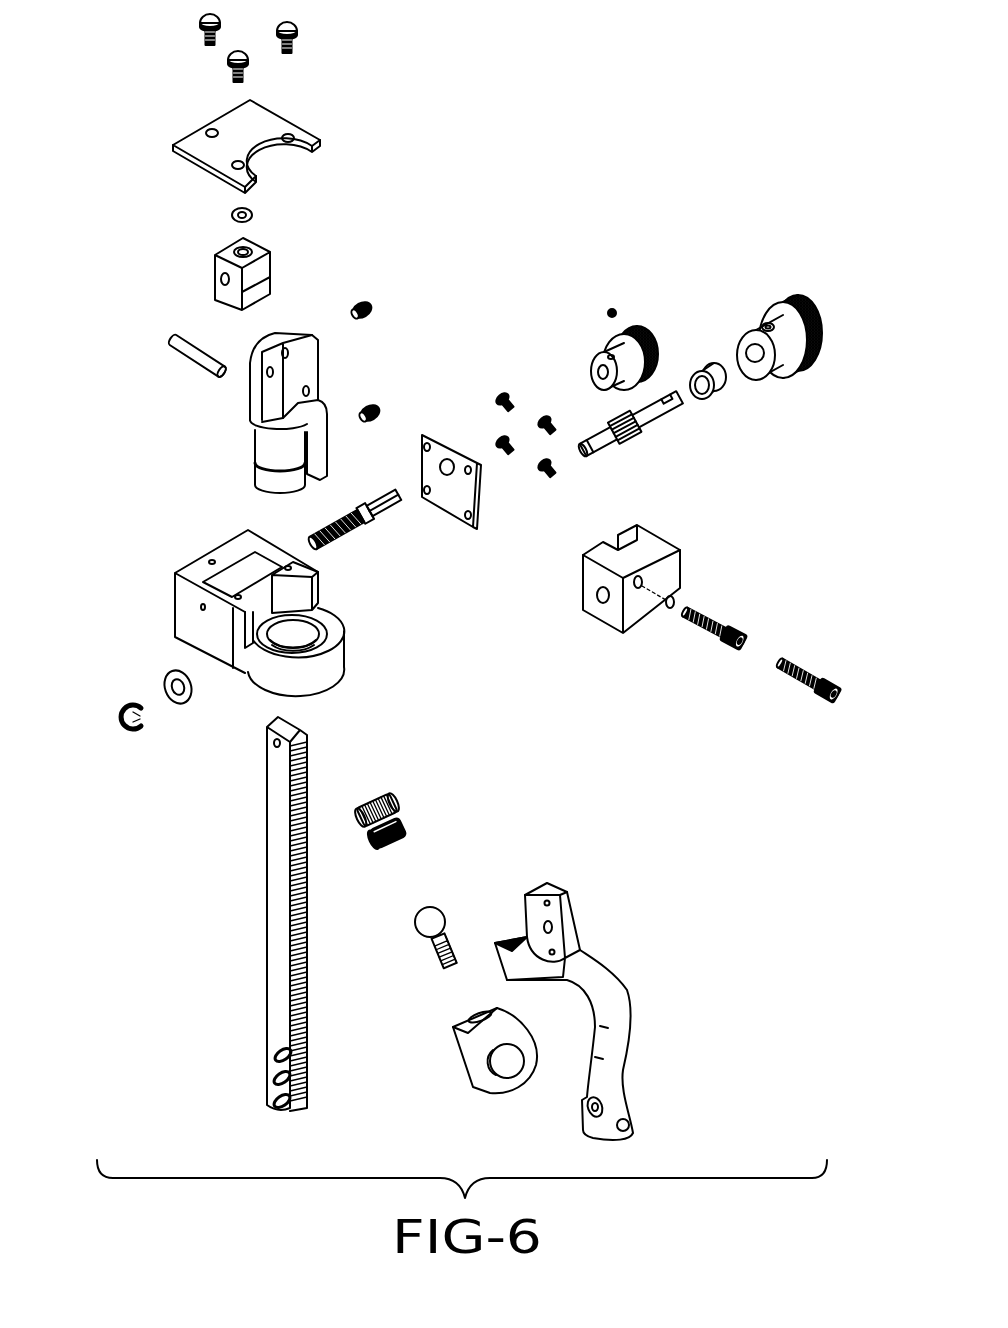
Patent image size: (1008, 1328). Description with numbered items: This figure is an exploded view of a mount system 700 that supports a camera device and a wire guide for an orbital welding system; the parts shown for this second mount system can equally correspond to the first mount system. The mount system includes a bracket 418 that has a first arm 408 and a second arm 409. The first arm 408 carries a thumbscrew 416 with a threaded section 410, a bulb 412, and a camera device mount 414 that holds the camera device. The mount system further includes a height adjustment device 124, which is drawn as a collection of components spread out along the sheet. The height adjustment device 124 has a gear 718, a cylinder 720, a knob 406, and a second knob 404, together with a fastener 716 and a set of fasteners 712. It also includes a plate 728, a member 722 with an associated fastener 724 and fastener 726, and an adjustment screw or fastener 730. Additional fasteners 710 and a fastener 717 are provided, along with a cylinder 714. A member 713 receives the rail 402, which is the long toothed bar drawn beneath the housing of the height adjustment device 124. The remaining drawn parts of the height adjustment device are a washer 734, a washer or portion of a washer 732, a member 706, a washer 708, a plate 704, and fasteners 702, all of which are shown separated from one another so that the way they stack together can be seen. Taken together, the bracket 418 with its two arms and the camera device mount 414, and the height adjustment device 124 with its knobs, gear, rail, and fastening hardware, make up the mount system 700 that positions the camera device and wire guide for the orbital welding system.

The drive assembly 700 is at (568, 152).
The fasteners 702 is at (270, 50).
The plate 704 is at (312, 148).
The member 706 is at (262, 268).
The washer 708 is at (253, 213).
The fasteners 710 is at (368, 405).
The fasteners 712 is at (534, 388).
The member 713 is at (256, 412).
The cylinder 714 is at (190, 355).
The fastener 716 is at (613, 307).
The fastener 717 is at (760, 324).
The knob 404 is at (652, 348).
The knob 406 is at (815, 318).
The gear 718 is at (655, 418).
The cylinder 720 is at (716, 385).
The member 722 is at (655, 543).
The fastener 724 is at (708, 627).
The fastener 726 is at (798, 674).
The plate 728 is at (478, 505).
The adjustment screw or fastener 730 is at (352, 527).
The height adjustment device 124 is at (185, 610).
The washer or portion of washer 732 is at (128, 730).
The washer 734 is at (186, 703).
The rail 402 is at (280, 908).
The first arm 408 is at (395, 768).
The threaded section 410 is at (405, 838).
The bulb 412 is at (428, 950).
The camera device mount 414 is at (465, 1040).
The thumbscrew 416 is at (395, 796).
The bracket 418 is at (572, 933).
The second arm 409 is at (645, 1130).